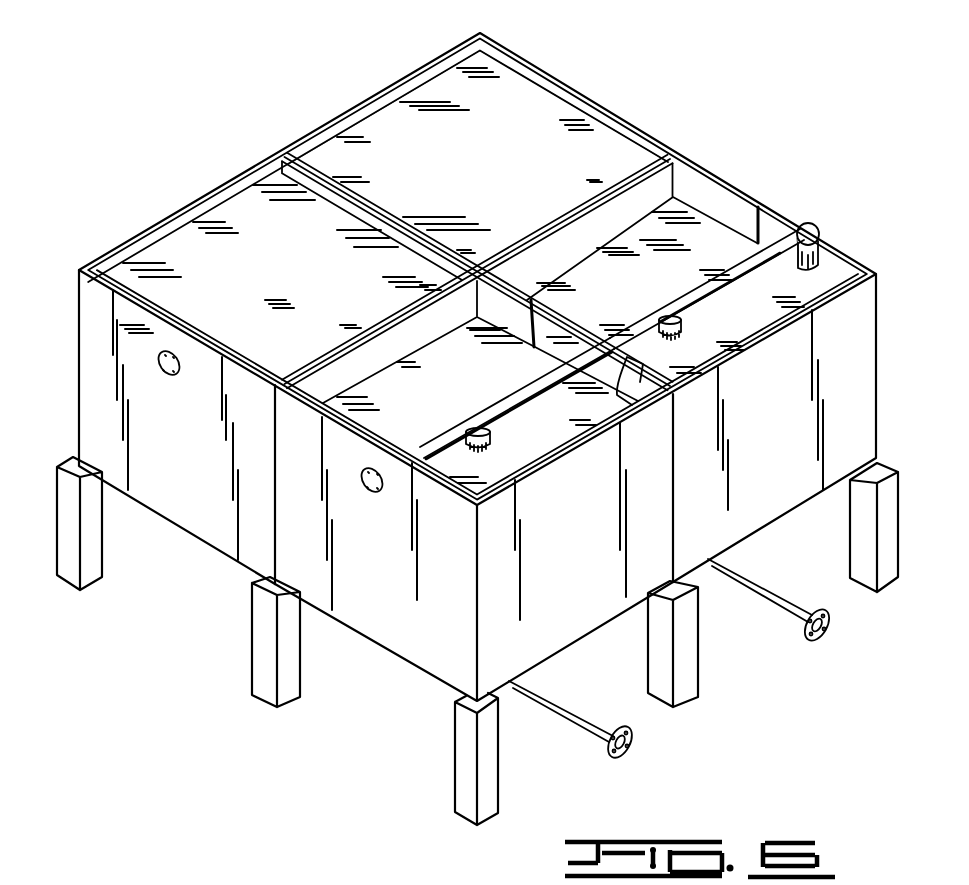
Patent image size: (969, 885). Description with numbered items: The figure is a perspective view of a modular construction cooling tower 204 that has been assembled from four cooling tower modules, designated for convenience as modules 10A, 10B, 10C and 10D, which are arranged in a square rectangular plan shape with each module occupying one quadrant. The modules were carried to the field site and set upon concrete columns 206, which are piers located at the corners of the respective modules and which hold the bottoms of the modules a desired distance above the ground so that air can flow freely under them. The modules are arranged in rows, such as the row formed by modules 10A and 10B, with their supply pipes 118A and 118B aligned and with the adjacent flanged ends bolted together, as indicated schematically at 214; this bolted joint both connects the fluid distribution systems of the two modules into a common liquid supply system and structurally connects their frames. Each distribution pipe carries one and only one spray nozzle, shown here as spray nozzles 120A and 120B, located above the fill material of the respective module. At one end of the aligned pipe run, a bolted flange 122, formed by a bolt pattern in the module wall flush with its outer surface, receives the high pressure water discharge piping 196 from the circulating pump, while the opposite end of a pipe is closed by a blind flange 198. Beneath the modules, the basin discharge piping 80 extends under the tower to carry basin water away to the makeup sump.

The modular construction cooling tower 204 is at (646, 82).
The module 10A is at (398, 625).
The module 10B is at (862, 330).
The module 10C is at (519, 60).
The module 10D is at (195, 203).
The blind flange 198 is at (165, 377).
The concrete column 206 is at (93, 556).
The basin discharge piping 80 is at (587, 718).
The supply pipe 118A is at (513, 395).
The supply pipe 118B is at (717, 283).
The spray nozzle 120A is at (491, 444).
The spray nozzle 120B is at (684, 329).
The bolted flange 122 is at (803, 222).
The high pressure water discharge piping 196 is at (821, 250).
The bolted connection of flanged ends 214 is at (600, 350).